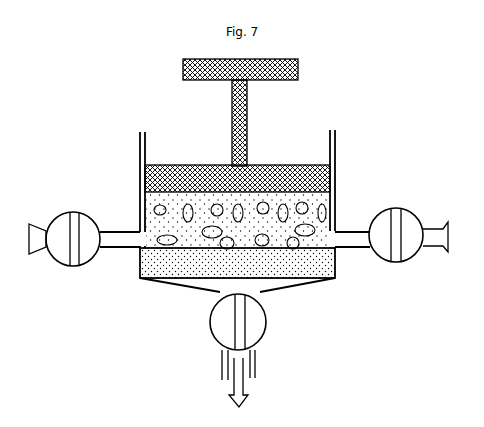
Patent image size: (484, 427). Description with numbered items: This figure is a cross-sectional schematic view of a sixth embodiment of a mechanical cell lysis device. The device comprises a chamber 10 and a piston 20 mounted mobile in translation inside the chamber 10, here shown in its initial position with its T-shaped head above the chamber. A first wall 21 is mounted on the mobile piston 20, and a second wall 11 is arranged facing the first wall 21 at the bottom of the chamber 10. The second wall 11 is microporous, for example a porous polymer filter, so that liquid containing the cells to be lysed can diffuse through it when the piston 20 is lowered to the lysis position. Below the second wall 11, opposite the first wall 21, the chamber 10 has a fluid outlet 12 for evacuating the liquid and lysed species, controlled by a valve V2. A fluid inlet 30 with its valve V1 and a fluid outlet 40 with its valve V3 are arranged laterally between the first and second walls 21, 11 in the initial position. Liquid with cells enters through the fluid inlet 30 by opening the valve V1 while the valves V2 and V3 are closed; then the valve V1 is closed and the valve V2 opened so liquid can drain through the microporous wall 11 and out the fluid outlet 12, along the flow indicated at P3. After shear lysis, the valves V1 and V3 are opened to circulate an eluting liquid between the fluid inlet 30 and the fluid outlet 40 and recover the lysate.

The chamber 10 is at (340, 141).
The second wall 11 is at (337, 263).
The fluid outlet 12 is at (223, 376).
The piston 20 is at (230, 108).
The first wall 21 is at (298, 165).
The fluid inlet 30 is at (131, 230).
The fluid outlet 40 is at (343, 228).
The valve V1 is at (90, 266).
The valve V2 is at (266, 322).
The valve V3 is at (418, 214).
The flow direction P3 is at (250, 386).